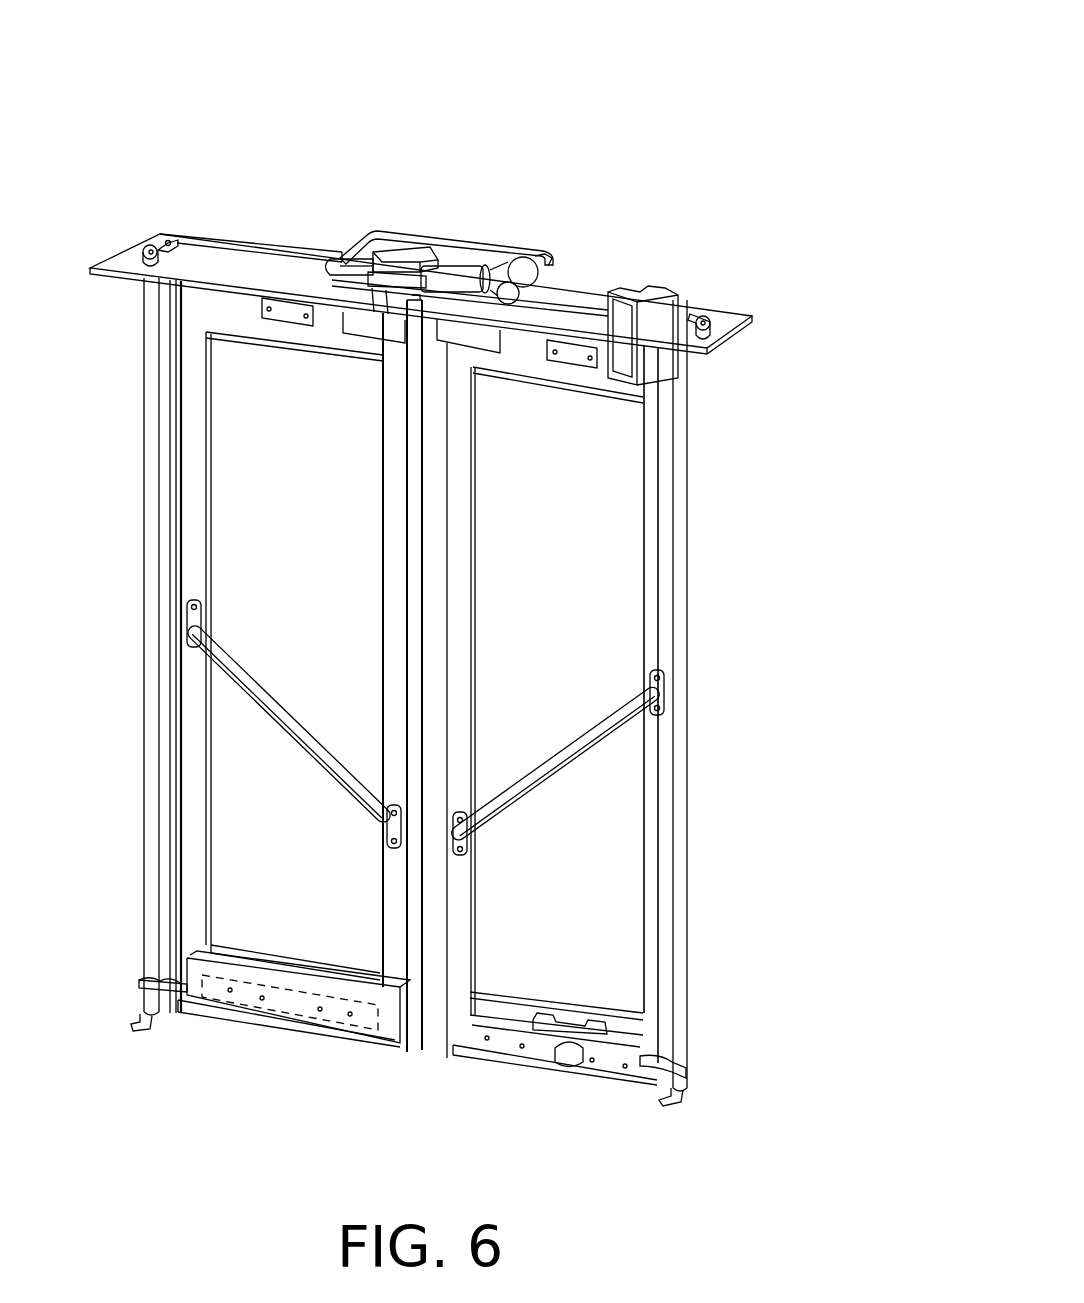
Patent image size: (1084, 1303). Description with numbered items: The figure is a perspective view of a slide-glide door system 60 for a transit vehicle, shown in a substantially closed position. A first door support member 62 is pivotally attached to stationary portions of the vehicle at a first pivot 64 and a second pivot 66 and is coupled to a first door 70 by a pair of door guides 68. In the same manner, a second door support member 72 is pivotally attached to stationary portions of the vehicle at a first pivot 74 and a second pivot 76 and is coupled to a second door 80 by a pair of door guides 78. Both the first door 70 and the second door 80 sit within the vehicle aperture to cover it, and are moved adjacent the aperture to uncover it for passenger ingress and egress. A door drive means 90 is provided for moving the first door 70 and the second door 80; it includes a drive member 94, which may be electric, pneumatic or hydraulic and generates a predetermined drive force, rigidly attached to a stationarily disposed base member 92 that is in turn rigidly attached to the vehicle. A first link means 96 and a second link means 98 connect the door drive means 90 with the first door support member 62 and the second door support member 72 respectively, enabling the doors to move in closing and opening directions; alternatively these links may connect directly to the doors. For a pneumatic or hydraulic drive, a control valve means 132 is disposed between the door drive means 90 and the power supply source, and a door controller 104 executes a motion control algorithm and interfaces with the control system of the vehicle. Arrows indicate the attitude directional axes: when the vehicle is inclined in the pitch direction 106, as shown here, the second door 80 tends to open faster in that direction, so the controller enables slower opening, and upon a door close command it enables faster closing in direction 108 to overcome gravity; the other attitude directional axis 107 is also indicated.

The slide-glide door system 60 is at (262, 1062).
The first door support member 62 is at (150, 287).
The first pivot 64 is at (135, 1030).
The second pivot 66 is at (160, 240).
The door guides 68 is at (290, 317).
The first door 70 is at (320, 574).
The second door support member 72 is at (690, 623).
The first pivot 74 is at (682, 1098).
The second pivot 76 is at (694, 322).
The door guides 78 is at (572, 356).
The second door 80 is at (584, 602).
The door drive means 90 is at (472, 253).
The base member 92 is at (132, 254).
The drive member 94 is at (418, 258).
The first link means 96 is at (273, 259).
The second link means 98 is at (555, 310).
The door controller 104 is at (655, 362).
The pitch direction 106 is at (820, 87).
The attitude directional axis 107 is at (828, 115).
The closing direction 108 is at (780, 125).
The control valve means 132 is at (540, 250).